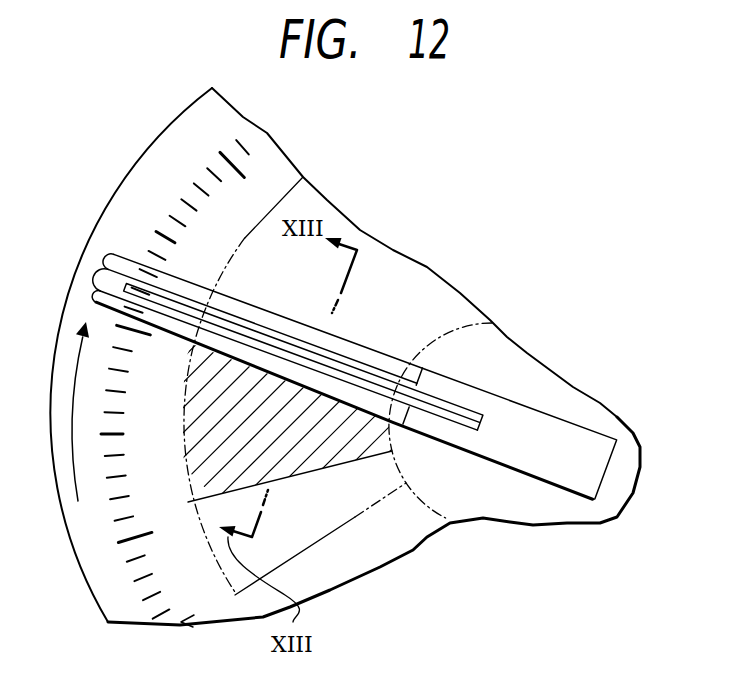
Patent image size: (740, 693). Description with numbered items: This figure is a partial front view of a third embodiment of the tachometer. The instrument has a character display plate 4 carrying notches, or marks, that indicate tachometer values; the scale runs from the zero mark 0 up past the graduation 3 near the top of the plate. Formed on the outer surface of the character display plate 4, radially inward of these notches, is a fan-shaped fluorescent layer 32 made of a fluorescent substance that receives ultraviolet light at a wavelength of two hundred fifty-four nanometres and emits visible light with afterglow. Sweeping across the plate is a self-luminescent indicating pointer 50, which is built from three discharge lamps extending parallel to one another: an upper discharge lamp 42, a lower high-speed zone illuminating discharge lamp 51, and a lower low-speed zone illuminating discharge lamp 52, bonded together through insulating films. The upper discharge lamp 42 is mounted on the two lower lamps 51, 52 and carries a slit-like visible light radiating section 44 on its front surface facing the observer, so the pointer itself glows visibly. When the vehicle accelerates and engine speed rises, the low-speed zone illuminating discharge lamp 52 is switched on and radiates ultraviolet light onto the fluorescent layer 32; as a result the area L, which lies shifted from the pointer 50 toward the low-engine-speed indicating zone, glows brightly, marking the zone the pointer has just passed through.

The character display plate 4 is at (230, 118).
The scale graduation 3 is at (240, 174).
The zero mark 0 is at (198, 609).
The fluorescent layer 32 is at (347, 530).
The upper discharge lamp 42 is at (303, 352).
The visible light radiating section 44 is at (215, 322).
The self-luminescent indicating pointer 50 is at (375, 331).
The lower high-speed zone illuminating discharge lamp 51 is at (237, 360).
The lower low-speed zone illuminating discharge lamp 52 is at (375, 400).
The area L is at (297, 473).